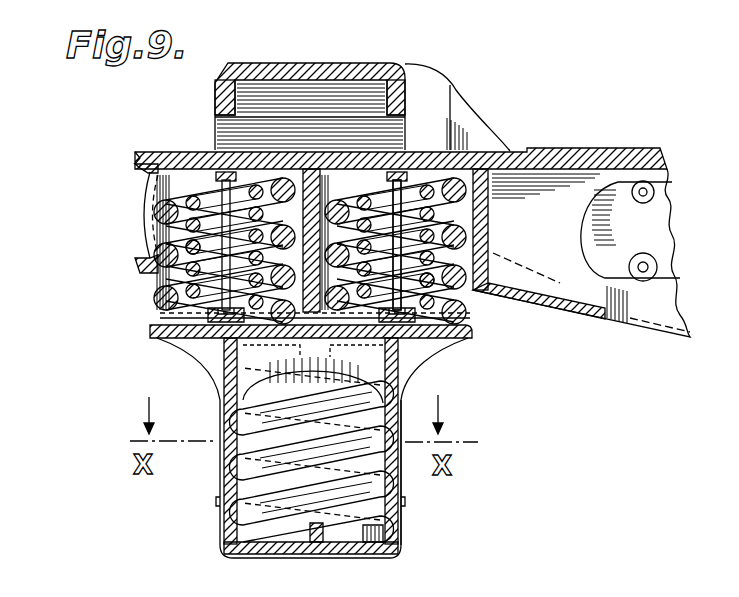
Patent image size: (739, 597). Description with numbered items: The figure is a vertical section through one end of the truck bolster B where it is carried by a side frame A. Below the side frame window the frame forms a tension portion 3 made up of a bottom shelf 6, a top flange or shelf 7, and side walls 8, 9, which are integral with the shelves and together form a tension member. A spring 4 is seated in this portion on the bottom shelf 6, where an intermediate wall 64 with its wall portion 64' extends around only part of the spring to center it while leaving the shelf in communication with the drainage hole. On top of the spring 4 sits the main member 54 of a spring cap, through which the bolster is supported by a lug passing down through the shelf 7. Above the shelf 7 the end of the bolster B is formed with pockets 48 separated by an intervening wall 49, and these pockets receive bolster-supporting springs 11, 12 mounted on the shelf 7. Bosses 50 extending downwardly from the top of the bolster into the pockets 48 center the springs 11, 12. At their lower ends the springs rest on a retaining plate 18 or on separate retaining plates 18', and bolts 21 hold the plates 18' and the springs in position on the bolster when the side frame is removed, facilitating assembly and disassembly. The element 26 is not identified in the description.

The side frame A is at (348, 63).
The truck bolster B is at (600, 148).
The tension portion 3 is at (321, 499).
The spring 4 is at (250, 512).
The bottom shelf 6 is at (382, 558).
The top flange or shelf 7 is at (468, 337).
The side wall 8 is at (232, 414).
The side wall 9 is at (399, 410).
The bolster-supporting spring 11 is at (160, 213).
The bolster-supporting spring 12 is at (490, 235).
The retaining plate 18 is at (351, 309).
The separate retaining plate 18' is at (280, 329).
The bolt 21 is at (158, 275).
The lug 26 is at (495, 138).
The pocket 48 is at (157, 194).
The intervening wall 49 is at (330, 294).
The boss 50 is at (218, 151).
The main member 54 is at (350, 372).
The intermediate wall 64 is at (313, 560).
The wall portion 64' is at (409, 534).